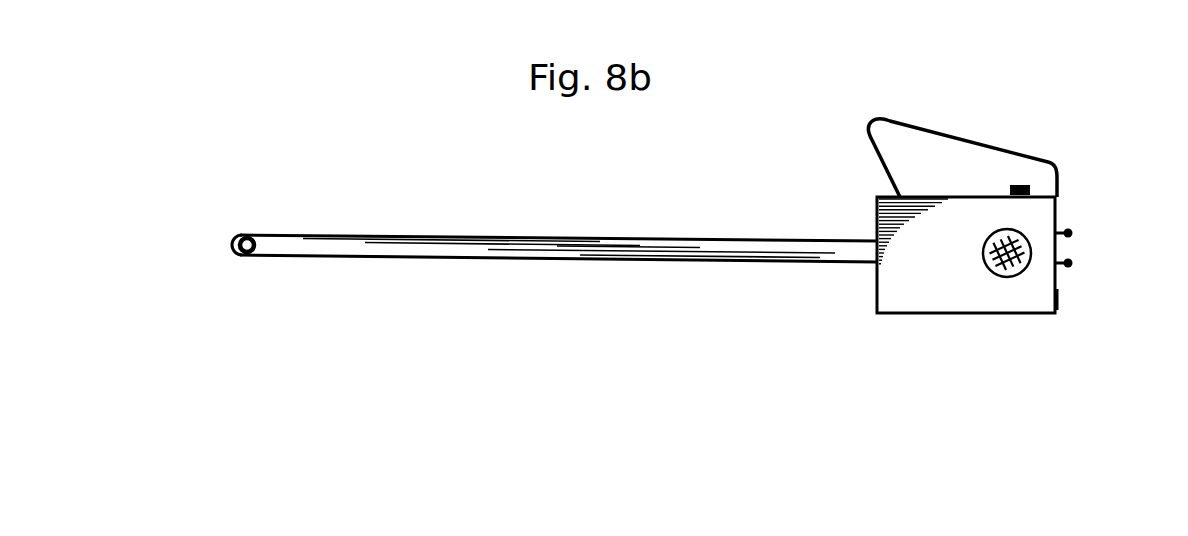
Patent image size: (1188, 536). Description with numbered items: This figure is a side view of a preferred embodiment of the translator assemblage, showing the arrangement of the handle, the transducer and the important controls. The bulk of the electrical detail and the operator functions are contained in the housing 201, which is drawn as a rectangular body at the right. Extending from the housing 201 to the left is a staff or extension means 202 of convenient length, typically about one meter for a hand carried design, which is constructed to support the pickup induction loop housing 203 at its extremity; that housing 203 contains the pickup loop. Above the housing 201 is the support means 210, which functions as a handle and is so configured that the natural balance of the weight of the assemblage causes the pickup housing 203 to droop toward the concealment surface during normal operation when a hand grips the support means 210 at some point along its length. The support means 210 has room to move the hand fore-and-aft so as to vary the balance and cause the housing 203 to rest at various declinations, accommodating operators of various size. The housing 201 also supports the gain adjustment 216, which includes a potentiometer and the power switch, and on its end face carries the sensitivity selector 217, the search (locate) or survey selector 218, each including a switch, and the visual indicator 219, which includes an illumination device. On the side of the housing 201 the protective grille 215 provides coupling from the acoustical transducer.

The housing 201 is at (897, 316).
The staff or extension means 202 is at (500, 235).
The pickup induction loop housing 203 is at (233, 232).
The support means 210 is at (950, 130).
The protective grille 215 is at (997, 278).
The gain adjustment 216 is at (997, 184).
The sensitivity selector 217 is at (1076, 223).
The search (locate) or survey selector 218 is at (1082, 264).
The visual indicator 219 is at (1068, 300).